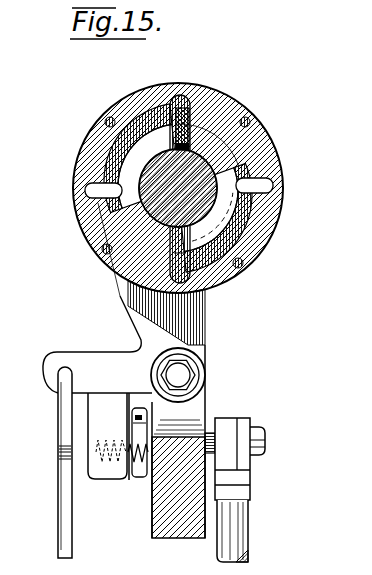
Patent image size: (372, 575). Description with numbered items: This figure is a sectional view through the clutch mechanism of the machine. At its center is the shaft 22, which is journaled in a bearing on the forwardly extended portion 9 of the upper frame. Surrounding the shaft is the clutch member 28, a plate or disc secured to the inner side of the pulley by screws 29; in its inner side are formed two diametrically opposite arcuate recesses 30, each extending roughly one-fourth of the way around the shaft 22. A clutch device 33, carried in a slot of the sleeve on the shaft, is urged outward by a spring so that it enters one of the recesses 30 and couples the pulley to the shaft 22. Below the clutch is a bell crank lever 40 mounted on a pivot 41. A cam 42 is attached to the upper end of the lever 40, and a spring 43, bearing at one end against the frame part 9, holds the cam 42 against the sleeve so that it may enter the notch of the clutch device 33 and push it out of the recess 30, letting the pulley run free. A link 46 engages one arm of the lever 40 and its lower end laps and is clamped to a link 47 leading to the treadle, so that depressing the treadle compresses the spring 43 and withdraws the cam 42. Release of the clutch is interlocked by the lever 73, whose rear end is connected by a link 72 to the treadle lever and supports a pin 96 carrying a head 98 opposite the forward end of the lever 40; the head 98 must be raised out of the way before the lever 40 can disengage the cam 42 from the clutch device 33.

The forwardly extended portion 9 is at (178, 535).
The shaft 22 is at (145, 203).
The clutch member 28 is at (242, 262).
The screws 29 is at (245, 122).
The arcuate recesses 30 is at (122, 140).
The clutch device 33 is at (180, 118).
The bell crank lever 40 is at (142, 370).
The pivot 41 is at (181, 375).
The cam 42 is at (128, 290).
The spring 43 is at (139, 478).
The link 46 is at (62, 481).
The link 47 is at (113, 467).
The link 72 is at (230, 528).
The lever 73 is at (228, 430).
The pin 96 is at (210, 432).
The head 98 is at (132, 414).